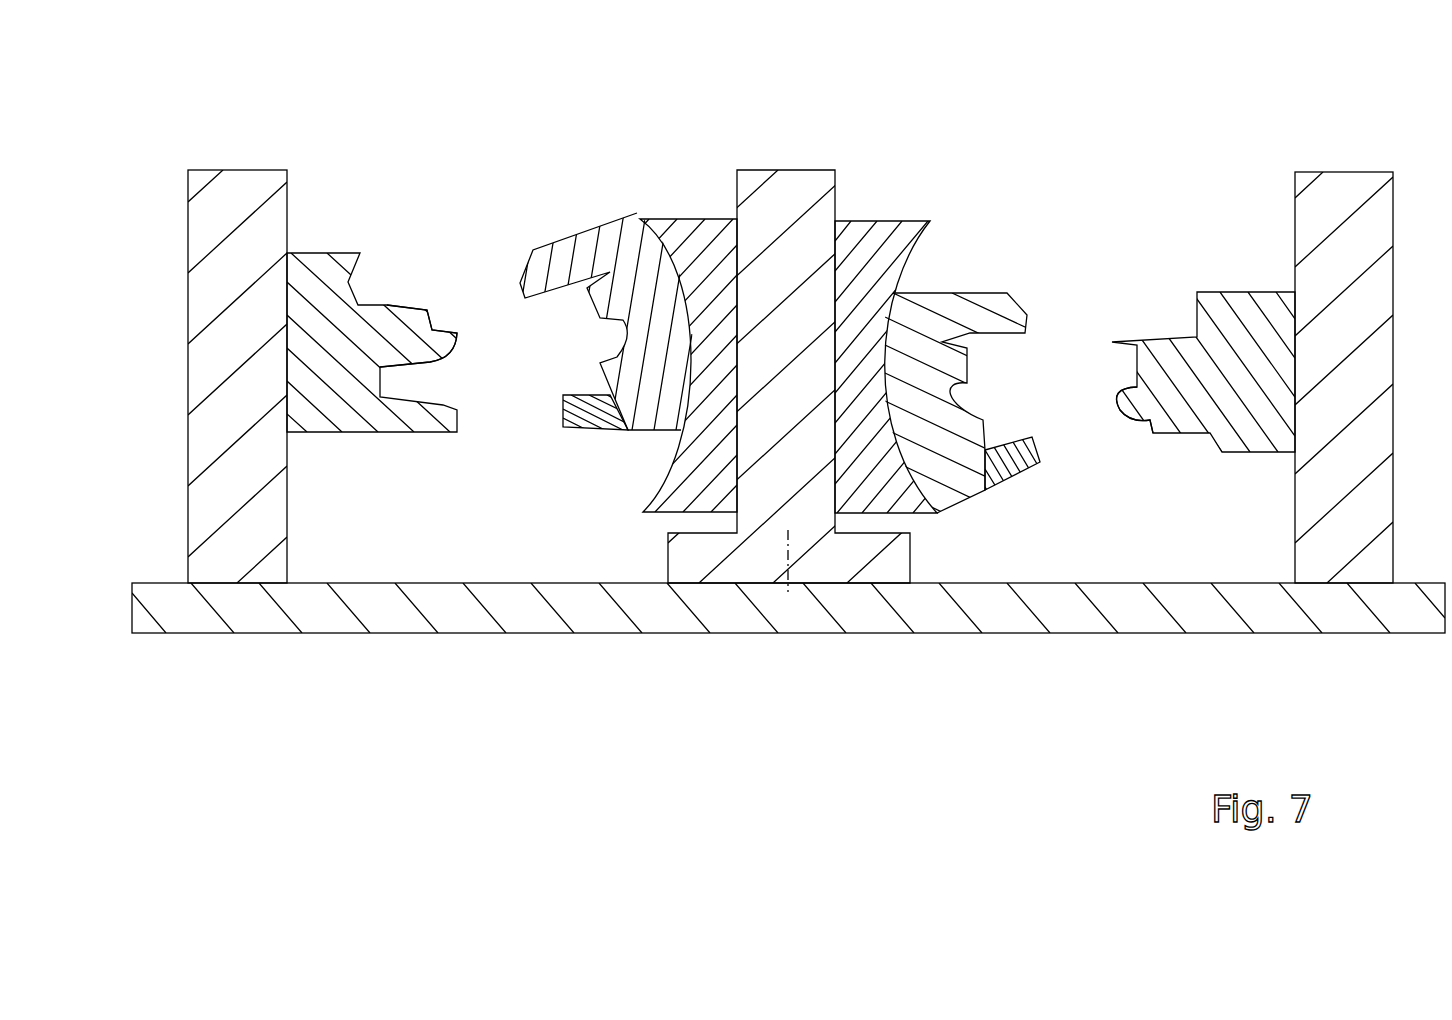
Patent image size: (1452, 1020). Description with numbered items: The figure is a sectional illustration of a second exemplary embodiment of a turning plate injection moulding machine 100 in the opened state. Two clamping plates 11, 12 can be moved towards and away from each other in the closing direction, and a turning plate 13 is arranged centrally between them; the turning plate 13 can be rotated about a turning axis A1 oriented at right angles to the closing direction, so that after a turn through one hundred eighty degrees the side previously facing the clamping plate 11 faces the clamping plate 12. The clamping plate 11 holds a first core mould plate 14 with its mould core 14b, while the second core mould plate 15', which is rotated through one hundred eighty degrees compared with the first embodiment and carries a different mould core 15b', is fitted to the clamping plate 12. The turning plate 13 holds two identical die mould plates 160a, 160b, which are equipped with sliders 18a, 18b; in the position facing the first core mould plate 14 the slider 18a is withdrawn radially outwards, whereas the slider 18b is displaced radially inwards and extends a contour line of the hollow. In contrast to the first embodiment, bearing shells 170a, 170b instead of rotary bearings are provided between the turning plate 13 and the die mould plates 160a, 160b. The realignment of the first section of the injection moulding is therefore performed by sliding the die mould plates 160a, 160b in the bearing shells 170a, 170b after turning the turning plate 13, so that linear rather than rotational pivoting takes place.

The turning plate machine 100 is at (787, 70).
The clamping plate 11 is at (1349, 173).
The clamping plate 12 is at (233, 173).
The turning plate 13 is at (788, 169).
The first core mould plate 14 is at (1240, 291).
The mould core 14b is at (1160, 427).
The second core mould plate 15' is at (372, 318).
The mould core 15b' is at (418, 312).
The die mould plate 160a is at (974, 298).
The die mould plate 160b is at (567, 240).
The bearing shell 170a is at (882, 222).
The bearing shell 170b is at (690, 222).
The slider 18a is at (1015, 472).
The slider 18b is at (580, 430).
The turning axis A1 is at (790, 578).